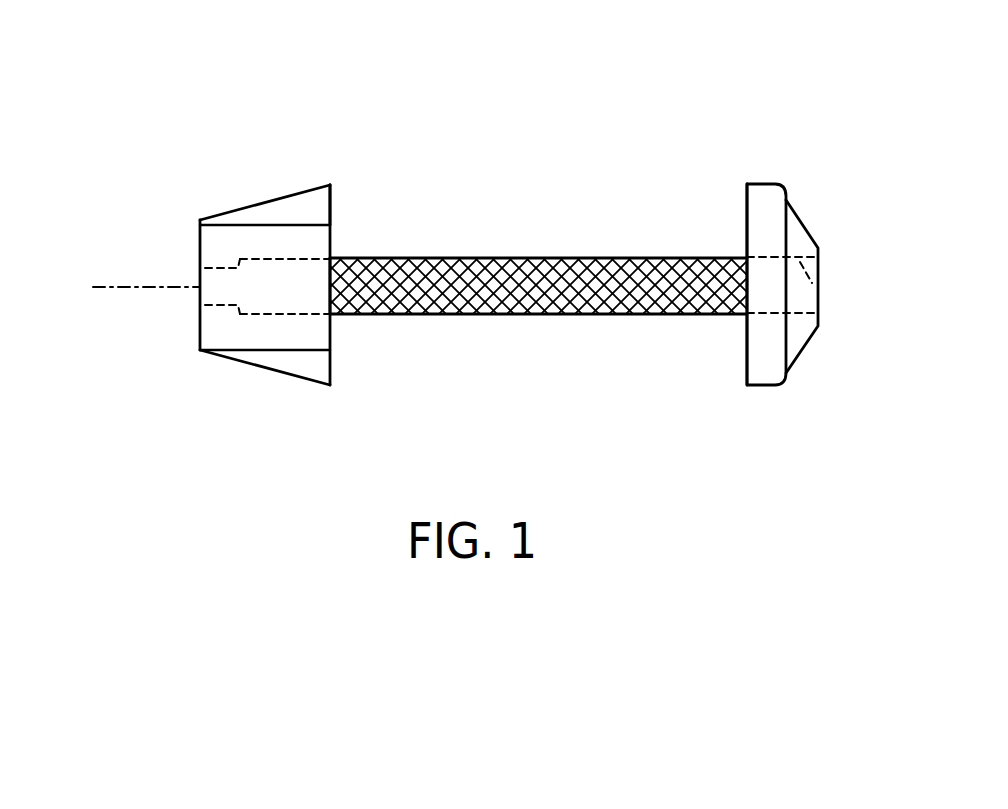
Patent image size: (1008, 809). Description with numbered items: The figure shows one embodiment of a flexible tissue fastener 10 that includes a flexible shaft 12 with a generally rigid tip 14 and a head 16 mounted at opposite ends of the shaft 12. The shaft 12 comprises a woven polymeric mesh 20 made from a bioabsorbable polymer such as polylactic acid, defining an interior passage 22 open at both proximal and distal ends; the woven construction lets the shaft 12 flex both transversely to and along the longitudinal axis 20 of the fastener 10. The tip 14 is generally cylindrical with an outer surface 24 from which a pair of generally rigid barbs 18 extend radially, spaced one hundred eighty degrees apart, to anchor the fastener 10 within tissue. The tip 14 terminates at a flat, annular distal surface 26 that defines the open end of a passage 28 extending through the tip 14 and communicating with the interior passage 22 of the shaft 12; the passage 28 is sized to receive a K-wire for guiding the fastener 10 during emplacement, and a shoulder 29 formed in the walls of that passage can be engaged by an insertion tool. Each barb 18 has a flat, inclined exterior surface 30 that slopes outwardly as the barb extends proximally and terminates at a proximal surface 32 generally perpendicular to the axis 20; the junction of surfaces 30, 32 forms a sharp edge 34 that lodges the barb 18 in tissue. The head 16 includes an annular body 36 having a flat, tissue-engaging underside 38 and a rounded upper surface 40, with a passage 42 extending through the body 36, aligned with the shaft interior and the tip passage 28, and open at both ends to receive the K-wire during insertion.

The flexible tissue fastener 10 is at (275, 52).
The flexible shaft 12 is at (552, 228).
The tip 14 is at (248, 182).
The head 16 is at (796, 156).
The barbs 18 is at (288, 198).
The longitudinal axis 20 is at (113, 287).
The interior passage 22 is at (490, 315).
The outer surface 24 is at (200, 350).
The distal surface 26 is at (197, 332).
The passage 28 is at (340, 253).
The shoulder 29 is at (245, 265).
The inclined exterior surface 30 is at (250, 366).
The proximal surface 32 is at (333, 370).
The sharp edge 34 is at (330, 185).
The annular body 36 is at (765, 386).
The tissue-engaging underside 38 is at (745, 355).
The rounded upper surface 40 is at (810, 343).
The passage 42 is at (822, 287).